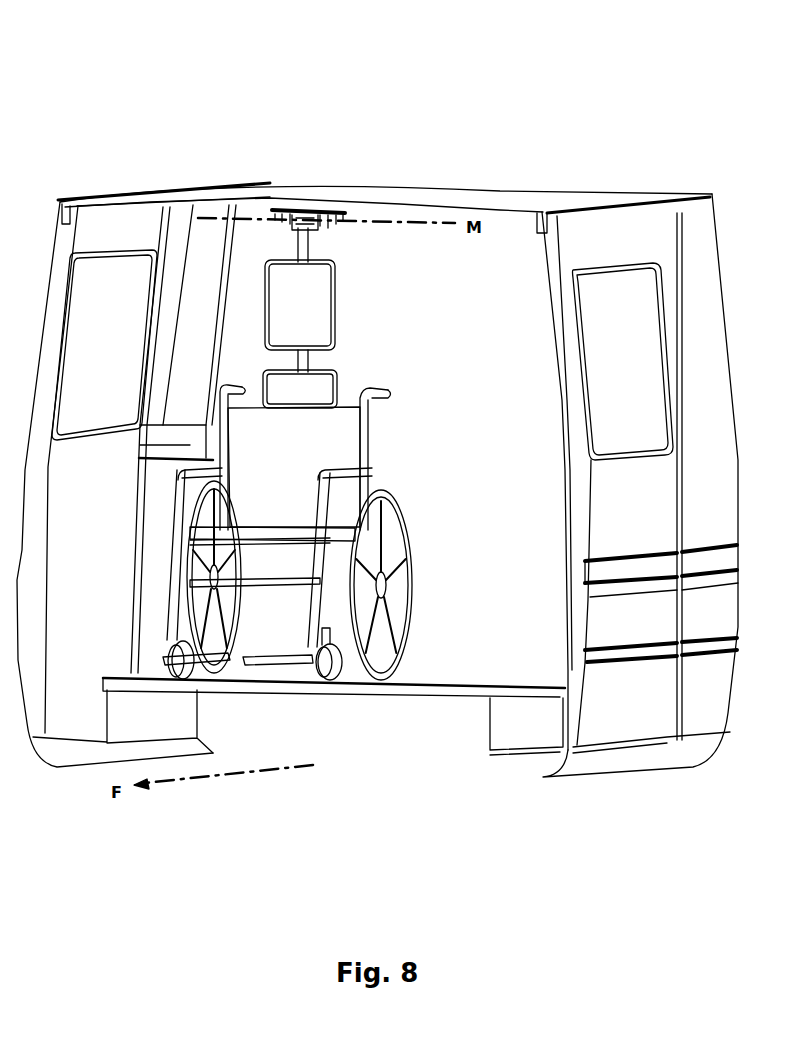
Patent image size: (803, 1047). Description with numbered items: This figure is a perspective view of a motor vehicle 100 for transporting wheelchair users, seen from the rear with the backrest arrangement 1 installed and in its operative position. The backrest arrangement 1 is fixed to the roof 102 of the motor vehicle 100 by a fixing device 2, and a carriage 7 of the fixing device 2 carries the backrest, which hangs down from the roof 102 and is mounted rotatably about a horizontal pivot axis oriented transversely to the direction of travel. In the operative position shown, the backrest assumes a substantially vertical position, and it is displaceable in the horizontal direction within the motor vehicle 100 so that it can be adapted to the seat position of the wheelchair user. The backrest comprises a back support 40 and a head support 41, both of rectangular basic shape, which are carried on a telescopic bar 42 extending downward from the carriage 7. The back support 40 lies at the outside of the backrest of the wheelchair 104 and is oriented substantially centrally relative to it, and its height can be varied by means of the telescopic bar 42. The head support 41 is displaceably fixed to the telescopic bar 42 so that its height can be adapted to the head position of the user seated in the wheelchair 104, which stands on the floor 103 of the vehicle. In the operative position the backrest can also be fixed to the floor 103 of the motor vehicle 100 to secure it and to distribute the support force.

The backrest arrangement 1 is at (375, 219).
The fixing device 2 is at (267, 204).
The carriage 7 is at (302, 204).
The back support 40 is at (297, 382).
The head support 41 is at (295, 308).
The telescopic bar 42 is at (303, 242).
The motor vehicle 100 is at (377, 454).
The roof 102 is at (467, 200).
The floor 103 is at (507, 672).
The wheelchair 104 is at (317, 450).